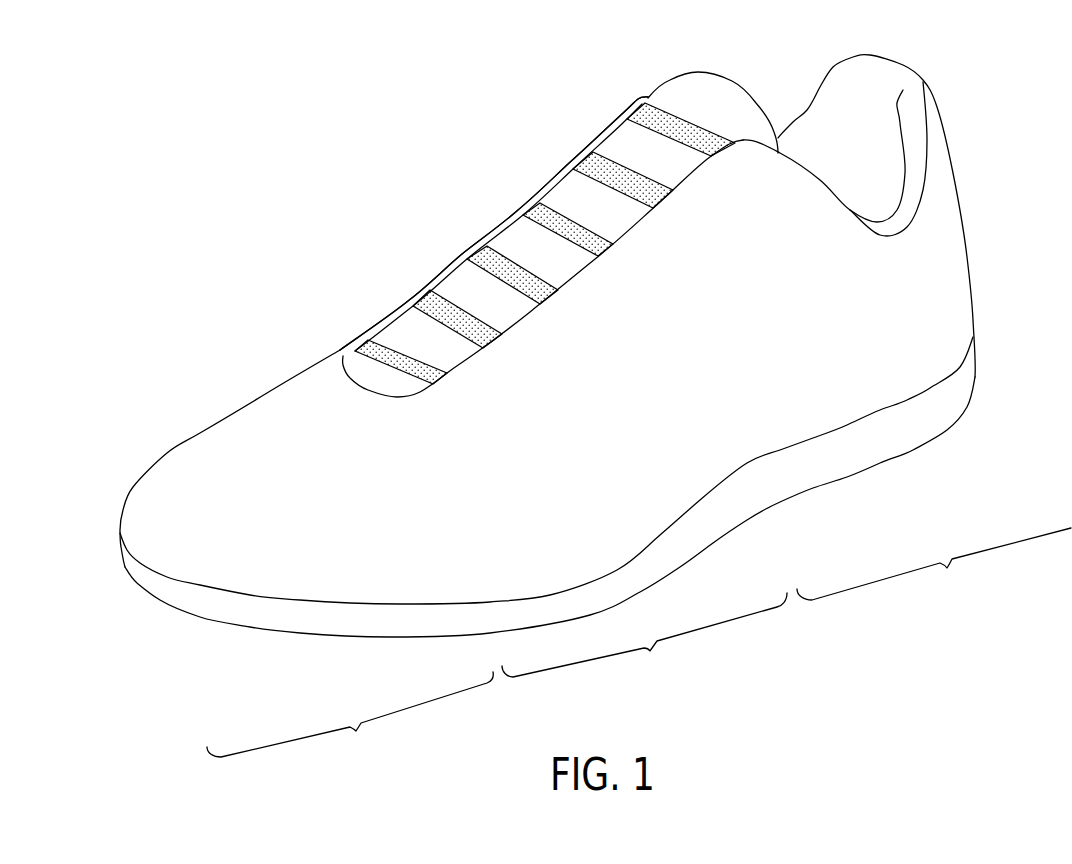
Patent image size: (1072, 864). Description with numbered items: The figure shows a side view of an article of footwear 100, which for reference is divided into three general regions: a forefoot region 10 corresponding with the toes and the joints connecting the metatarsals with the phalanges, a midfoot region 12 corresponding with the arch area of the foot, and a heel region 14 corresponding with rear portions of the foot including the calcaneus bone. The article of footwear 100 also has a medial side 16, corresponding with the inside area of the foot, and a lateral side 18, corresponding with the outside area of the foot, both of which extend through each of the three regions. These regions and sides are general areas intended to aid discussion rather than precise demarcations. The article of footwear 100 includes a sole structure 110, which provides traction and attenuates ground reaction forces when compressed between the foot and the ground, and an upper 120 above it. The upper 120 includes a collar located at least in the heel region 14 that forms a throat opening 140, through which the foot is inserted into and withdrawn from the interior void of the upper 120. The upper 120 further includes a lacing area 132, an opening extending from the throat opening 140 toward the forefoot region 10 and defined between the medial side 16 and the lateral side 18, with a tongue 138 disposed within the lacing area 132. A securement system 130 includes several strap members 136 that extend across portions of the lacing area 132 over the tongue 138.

The article of footwear 100 is at (290, 113).
The forefoot region 10 is at (350, 718).
The midfoot region 12 is at (644, 640).
The heel region 14 is at (934, 568).
The medial side 16 is at (347, 308).
The lateral side 18 is at (737, 415).
The sole structure 110 is at (973, 425).
The upper 120 is at (217, 398).
The securement system 130 is at (488, 247).
The lacing area 132 is at (447, 270).
The strap members 136 is at (600, 240).
The tongue 138 is at (692, 88).
The throat opening 140 is at (778, 112).